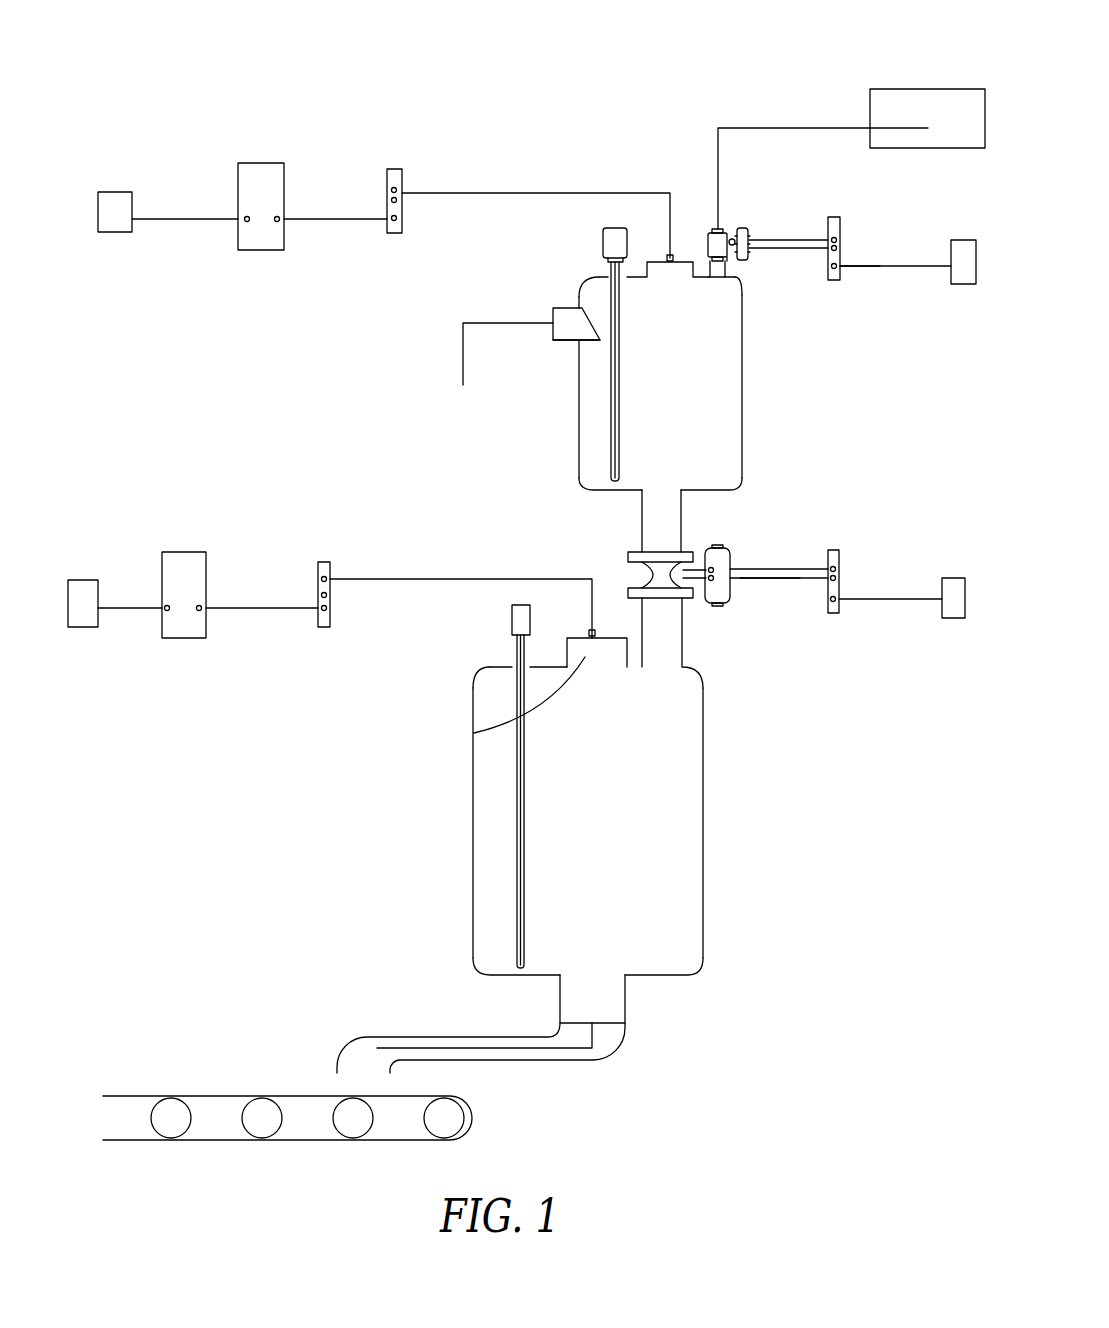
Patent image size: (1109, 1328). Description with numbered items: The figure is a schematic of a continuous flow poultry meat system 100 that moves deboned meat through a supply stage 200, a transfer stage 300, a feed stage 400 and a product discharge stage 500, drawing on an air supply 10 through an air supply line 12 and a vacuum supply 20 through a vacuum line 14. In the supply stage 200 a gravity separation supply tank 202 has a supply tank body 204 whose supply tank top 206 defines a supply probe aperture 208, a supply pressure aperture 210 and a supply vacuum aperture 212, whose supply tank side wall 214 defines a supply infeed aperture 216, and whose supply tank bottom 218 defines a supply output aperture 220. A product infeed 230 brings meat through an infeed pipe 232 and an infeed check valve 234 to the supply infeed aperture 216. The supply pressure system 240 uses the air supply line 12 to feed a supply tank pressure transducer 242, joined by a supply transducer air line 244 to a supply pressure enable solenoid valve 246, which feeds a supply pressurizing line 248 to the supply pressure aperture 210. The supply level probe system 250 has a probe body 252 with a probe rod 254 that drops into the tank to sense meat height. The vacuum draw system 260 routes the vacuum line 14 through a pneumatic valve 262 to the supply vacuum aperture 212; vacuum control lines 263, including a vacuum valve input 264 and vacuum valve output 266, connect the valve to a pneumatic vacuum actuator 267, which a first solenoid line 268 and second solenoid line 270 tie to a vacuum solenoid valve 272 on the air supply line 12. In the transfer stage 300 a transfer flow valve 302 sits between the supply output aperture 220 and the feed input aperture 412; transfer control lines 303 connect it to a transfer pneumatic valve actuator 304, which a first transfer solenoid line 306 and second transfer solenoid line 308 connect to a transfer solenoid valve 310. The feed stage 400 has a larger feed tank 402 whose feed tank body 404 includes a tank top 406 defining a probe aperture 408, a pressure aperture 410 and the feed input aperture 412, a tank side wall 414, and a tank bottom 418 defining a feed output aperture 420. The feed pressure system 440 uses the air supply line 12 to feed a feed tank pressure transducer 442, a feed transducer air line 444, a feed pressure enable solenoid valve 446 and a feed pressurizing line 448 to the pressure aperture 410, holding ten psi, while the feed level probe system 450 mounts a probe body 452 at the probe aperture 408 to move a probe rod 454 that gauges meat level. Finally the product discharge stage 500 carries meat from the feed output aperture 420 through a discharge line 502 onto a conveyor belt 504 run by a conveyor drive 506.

The air supply 10 is at (115, 192).
The air supply line 12 is at (150, 219).
The vacuum line 14 is at (822, 128).
The vacuum supply 20 is at (930, 148).
The continuous flow poultry meat system 100 is at (565, 79).
The supply stage 200 is at (756, 410).
The gravity separation supply tank 202 is at (577, 453).
The supply tank body 204 is at (579, 410).
The supply tank top 206 is at (603, 277).
The supply probe aperture 208 is at (607, 283).
The supply pressure aperture 210 is at (743, 290).
The supply vacuum aperture 212 is at (732, 273).
The supply tank side wall 214 is at (742, 375).
The supply infeed aperture 216 is at (582, 342).
The supply tank bottom 218 is at (722, 490).
The supply output aperture 220 is at (665, 490).
The product infeed 230 is at (462, 355).
The infeed pipe 232 is at (553, 322).
The infeed check valve 234 is at (550, 333).
The supply pressure system 240 is at (265, 140).
The supply tank pressure transducer 242 is at (260, 250).
The supply transducer air line 244 is at (300, 219).
The supply pressure enable solenoid valve 246 is at (395, 169).
The supply pressurizing line 248 is at (478, 193).
The supply level probe system 250 is at (583, 230).
The probe body 252 is at (615, 228).
The probe rod 254 is at (617, 307).
The vacuum draw system 260 is at (756, 105).
The pneumatic valve 262 is at (712, 229).
The vacuum control lines 263 is at (718, 260).
The vacuum valve input 264 is at (742, 228).
The vacuum valve output 266 is at (710, 245).
The pneumatic vacuum actuator 267 is at (735, 238).
The first solenoid line 268 is at (773, 250).
The second solenoid line 270 is at (840, 270).
The vacuum solenoid valve 272 is at (840, 220).
The transfer stage 300 is at (613, 528).
The transfer flow valve 302 is at (628, 556).
The transfer control lines 303 is at (711, 567).
The transfer pneumatic valve actuator 304 is at (722, 562).
The first transfer solenoid line 306 is at (795, 569).
The second transfer solenoid line 308 is at (767, 580).
The transfer solenoid valve 310 is at (840, 556).
The feed stage 400 is at (713, 847).
The feed tank 402 is at (470, 760).
The feed tank body 404 is at (473, 810).
The tank top 406 is at (500, 667).
The probe aperture 408 is at (480, 680).
The pressure aperture 410 is at (477, 730).
The feed input aperture 412 is at (665, 667).
The tank side wall 414 is at (703, 773).
The tank bottom 418 is at (670, 977).
The feed output aperture 420 is at (612, 1008).
The feed pressure system 440 is at (276, 665).
The feed tank pressure transducer 442 is at (207, 570).
The feed transducer air line 444 is at (250, 608).
The feed pressure enable solenoid valve 446 is at (325, 627).
The feed pressurizing line 448 is at (395, 579).
The feed level probe system 450 is at (518, 603).
The probe body 452 is at (520, 608).
The probe rod 454 is at (531, 657).
The product discharge stage 500 is at (457, 1010).
The discharge line 502 is at (382, 1035).
The conveyor belt 504 is at (290, 1093).
The conveyor drive 506 is at (452, 1115).